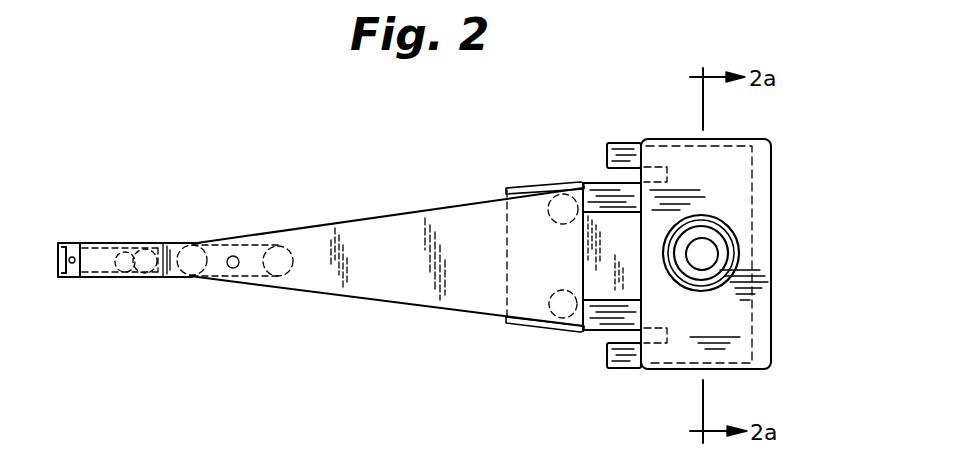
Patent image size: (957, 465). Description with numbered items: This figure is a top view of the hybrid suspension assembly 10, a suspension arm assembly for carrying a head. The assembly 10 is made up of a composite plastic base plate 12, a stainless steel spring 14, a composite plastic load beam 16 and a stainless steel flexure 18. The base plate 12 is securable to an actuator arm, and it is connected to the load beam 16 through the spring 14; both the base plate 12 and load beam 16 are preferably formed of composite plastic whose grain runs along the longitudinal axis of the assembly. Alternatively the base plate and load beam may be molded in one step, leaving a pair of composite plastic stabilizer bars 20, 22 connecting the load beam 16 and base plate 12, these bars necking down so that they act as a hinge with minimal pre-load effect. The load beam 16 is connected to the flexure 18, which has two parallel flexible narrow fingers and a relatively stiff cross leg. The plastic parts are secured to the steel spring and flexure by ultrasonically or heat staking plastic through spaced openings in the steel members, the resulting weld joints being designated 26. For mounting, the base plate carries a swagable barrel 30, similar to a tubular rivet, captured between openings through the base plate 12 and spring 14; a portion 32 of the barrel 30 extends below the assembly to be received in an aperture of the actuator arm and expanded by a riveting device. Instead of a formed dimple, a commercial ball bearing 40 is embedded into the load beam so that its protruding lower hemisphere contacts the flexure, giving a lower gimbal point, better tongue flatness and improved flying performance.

The hybrid suspension assembly 10 is at (366, 148).
The base plate 12 is at (679, 139).
The spring 14 is at (600, 145).
The load beam 16 is at (345, 238).
The flexure 18 is at (66, 232).
The stabilizer bar 20 is at (593, 198).
The stabilizer bar 22 is at (597, 318).
The weld joints 26 is at (506, 186).
The swagable barrel 30 is at (720, 222).
The portion of barrel 32 is at (737, 249).
The ball bearing 40 is at (139, 262).